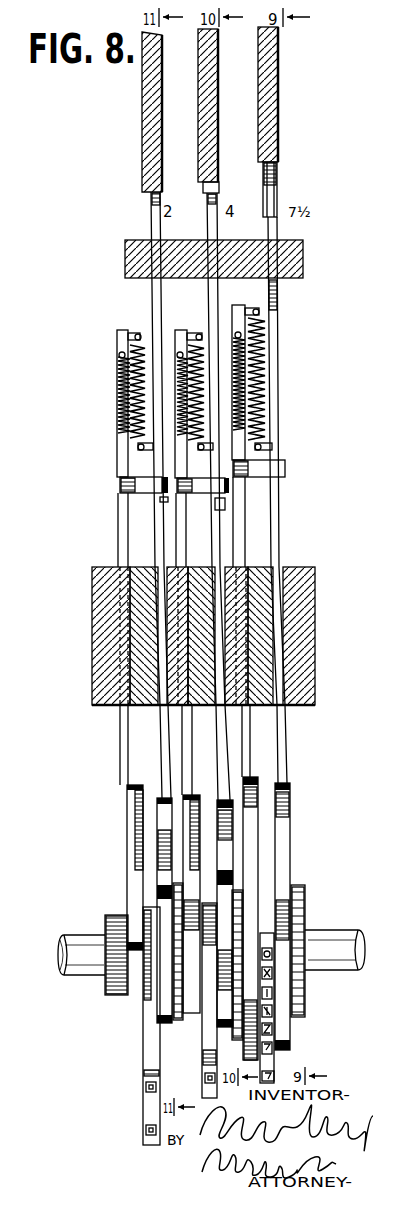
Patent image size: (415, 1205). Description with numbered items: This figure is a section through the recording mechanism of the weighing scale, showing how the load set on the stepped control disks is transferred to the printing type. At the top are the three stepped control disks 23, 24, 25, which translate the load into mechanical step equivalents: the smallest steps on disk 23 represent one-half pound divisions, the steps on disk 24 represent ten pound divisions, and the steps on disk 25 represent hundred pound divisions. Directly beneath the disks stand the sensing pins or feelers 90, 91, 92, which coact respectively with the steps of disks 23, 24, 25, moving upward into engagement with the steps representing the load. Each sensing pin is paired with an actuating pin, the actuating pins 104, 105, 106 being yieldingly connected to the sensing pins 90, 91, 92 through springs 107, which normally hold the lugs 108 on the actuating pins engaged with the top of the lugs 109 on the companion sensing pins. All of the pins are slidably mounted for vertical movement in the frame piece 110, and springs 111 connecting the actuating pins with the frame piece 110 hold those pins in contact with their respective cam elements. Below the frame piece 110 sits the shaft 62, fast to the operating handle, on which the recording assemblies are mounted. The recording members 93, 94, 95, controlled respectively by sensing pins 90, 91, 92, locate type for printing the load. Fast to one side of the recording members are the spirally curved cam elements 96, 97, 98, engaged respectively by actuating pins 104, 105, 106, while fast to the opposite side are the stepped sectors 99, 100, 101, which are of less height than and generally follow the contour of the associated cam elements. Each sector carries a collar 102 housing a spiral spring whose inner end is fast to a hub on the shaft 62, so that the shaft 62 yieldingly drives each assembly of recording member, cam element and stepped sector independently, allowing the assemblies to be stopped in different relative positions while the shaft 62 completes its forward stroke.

The stepped control disk 23 is at (270, 128).
The stepped control disk 24 is at (212, 133).
The stepped control disk 25 is at (157, 135).
The sensing pin 90 is at (272, 287).
The sensing pin 91 is at (211, 291).
The sensing pin 92 is at (153, 292).
The recording member 93 is at (278, 1061).
The recording member 94 is at (205, 1040).
The recording member 95 is at (153, 1044).
The cam element 96 is at (253, 781).
The cam element 97 is at (196, 793).
The cam element 98 is at (127, 813).
The stepped sector 99 is at (286, 836).
The stepped sector 100 is at (231, 829).
The stepped sector 101 is at (158, 854).
The collar 102 is at (180, 885).
The actuating pin 104 is at (242, 533).
The actuating pin 105 is at (184, 733).
The actuating pin 106 is at (128, 725).
The spring 107 is at (136, 350).
The lug 108 is at (145, 486).
The lug 109 is at (160, 506).
The frame piece 110 is at (102, 673).
The spring 111 is at (120, 414).
The shaft 62 is at (330, 938).